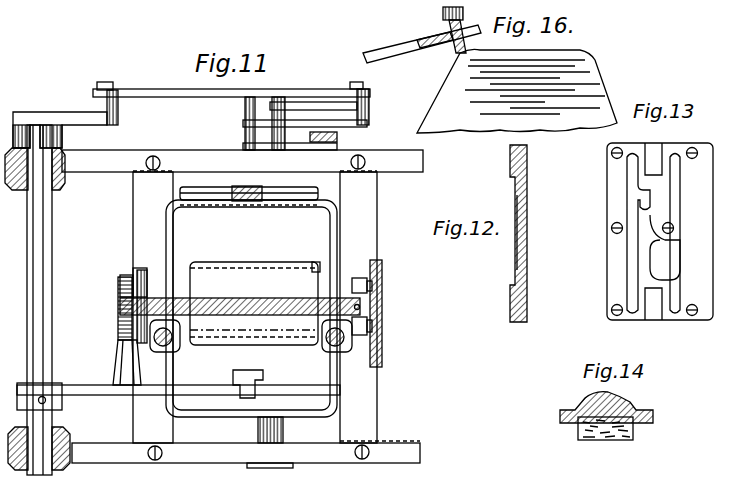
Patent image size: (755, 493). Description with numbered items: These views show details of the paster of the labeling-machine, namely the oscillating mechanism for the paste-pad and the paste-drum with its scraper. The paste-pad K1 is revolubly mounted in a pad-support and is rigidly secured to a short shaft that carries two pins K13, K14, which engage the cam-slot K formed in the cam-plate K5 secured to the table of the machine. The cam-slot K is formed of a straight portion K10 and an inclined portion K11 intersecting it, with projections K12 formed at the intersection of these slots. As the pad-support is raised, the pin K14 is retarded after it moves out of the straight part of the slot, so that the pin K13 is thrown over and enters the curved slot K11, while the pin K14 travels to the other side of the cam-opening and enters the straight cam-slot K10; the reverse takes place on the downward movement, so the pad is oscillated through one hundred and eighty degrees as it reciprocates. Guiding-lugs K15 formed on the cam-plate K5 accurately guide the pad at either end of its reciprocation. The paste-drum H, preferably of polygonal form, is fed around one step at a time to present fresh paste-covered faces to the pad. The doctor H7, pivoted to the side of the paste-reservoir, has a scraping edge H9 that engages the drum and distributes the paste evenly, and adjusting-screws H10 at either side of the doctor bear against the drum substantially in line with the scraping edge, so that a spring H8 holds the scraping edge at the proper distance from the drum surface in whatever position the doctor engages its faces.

In FIG. 11, the doctor H7 is at (251, 308).
In FIG. 16, the doctor H7 is at (374, 53).
In FIG. 11, the spring H8 is at (238, 200).
In FIG. 16, the scraping edge H9 is at (456, 52).
In FIG. 11, the adjusting-screws H10 is at (316, 268).
In FIG. 16, the adjusting-screws H10 is at (444, 13).
In FIG. 16, the paste-drum H is at (517, 91).
In FIG. 14, the cam-slot K is at (633, 435).
In FIG. 11, the paste-pad K1 is at (240, 303).
In FIG. 14, the paste-pad K1 is at (630, 404).
In FIG. 11, the cam-plate K5 is at (382, 270).
In FIG. 12, the cam-plate K5 is at (527, 170).
In FIG. 13, the cam-plate K5 is at (713, 197).
In FIG. 13, the straight portion K10 is at (627, 175).
In FIG. 13, the inclined portion K11 is at (680, 177).
In FIG. 13, the projections K12 is at (647, 210).
In FIG. 11, the pin K13 is at (372, 288).
In FIG. 11, the pin K14 is at (372, 325).
In FIG. 13, the guiding-lugs K15 is at (657, 318).